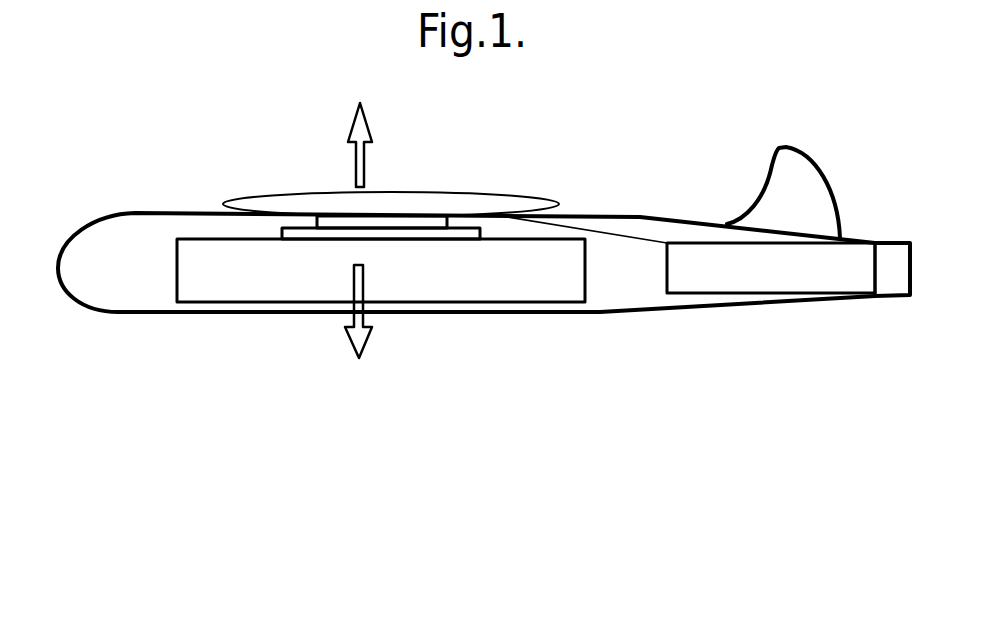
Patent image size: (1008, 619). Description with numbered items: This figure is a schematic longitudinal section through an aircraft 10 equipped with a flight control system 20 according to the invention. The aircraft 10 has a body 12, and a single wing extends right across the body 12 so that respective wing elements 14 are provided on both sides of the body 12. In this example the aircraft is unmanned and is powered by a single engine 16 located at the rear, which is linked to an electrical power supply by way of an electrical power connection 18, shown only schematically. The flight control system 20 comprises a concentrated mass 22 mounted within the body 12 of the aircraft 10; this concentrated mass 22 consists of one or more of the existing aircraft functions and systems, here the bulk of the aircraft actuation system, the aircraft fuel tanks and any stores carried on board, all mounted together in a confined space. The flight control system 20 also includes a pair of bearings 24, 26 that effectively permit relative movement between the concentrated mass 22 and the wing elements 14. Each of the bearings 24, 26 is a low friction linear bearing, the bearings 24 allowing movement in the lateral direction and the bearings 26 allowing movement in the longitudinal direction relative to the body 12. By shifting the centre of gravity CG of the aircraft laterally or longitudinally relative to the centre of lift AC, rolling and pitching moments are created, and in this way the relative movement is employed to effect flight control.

The aircraft 10 is at (277, 186).
The body 12 is at (109, 213).
The wing elements 14 is at (502, 205).
The engine 16 is at (808, 277).
The electrical power connection 18 is at (650, 237).
The flight control system 20 is at (558, 336).
The concentrated mass 22 is at (497, 285).
The bearings 24 is at (415, 233).
The bearings 26 is at (334, 221).